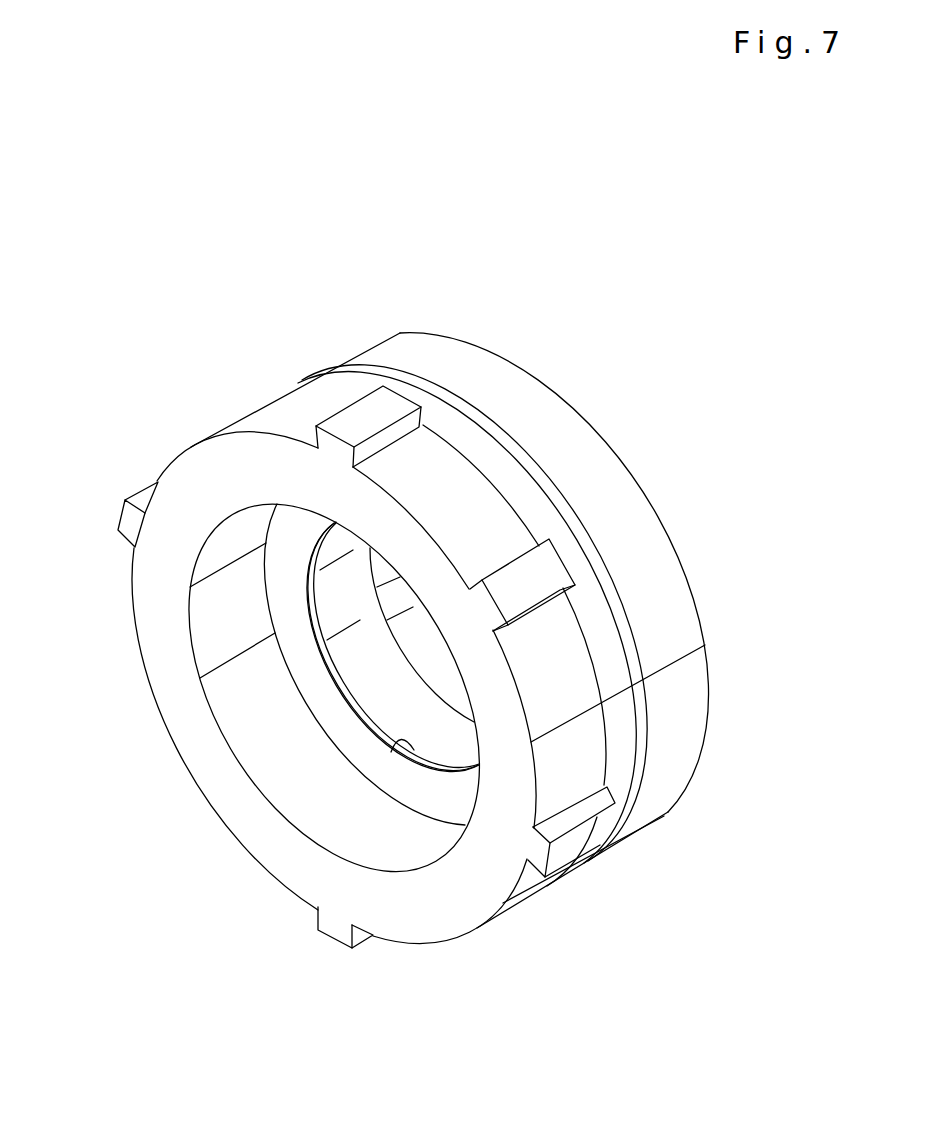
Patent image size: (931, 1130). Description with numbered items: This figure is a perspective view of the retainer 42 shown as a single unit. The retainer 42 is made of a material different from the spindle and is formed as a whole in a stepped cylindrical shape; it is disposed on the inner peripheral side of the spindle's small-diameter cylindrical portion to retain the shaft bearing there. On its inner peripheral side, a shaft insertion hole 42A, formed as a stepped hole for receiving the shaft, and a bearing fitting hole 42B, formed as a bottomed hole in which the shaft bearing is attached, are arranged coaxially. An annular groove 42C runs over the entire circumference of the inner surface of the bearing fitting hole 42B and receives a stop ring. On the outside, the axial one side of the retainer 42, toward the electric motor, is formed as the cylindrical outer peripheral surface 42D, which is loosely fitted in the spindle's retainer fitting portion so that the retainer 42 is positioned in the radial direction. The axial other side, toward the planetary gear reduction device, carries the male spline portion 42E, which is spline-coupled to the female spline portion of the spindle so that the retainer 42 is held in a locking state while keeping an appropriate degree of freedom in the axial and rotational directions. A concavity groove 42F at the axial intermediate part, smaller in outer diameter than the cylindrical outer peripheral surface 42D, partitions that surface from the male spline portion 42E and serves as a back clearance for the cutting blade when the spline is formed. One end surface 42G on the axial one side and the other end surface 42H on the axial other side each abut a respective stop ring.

The retainer 42 is at (448, 296).
The shaft insertion hole 42A is at (313, 760).
The bearing fitting hole 42B is at (315, 607).
The annular groove 42C is at (411, 746).
The cylindrical outer peripheral surface 42D is at (593, 477).
The male spline portion 42E is at (352, 424).
The concavity groove 42F is at (490, 452).
The one end surface 42G is at (677, 547).
The other end surface 42H is at (178, 696).